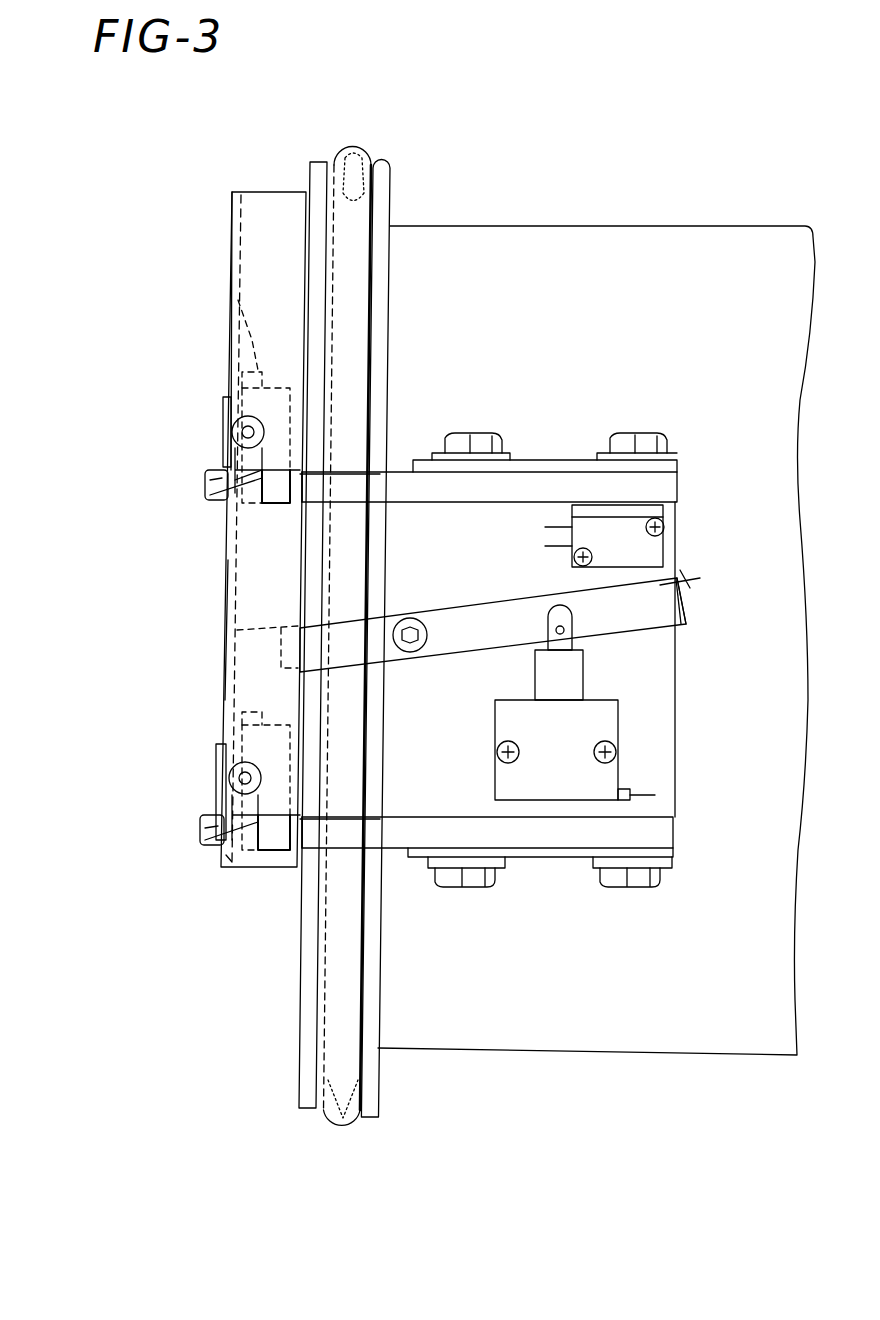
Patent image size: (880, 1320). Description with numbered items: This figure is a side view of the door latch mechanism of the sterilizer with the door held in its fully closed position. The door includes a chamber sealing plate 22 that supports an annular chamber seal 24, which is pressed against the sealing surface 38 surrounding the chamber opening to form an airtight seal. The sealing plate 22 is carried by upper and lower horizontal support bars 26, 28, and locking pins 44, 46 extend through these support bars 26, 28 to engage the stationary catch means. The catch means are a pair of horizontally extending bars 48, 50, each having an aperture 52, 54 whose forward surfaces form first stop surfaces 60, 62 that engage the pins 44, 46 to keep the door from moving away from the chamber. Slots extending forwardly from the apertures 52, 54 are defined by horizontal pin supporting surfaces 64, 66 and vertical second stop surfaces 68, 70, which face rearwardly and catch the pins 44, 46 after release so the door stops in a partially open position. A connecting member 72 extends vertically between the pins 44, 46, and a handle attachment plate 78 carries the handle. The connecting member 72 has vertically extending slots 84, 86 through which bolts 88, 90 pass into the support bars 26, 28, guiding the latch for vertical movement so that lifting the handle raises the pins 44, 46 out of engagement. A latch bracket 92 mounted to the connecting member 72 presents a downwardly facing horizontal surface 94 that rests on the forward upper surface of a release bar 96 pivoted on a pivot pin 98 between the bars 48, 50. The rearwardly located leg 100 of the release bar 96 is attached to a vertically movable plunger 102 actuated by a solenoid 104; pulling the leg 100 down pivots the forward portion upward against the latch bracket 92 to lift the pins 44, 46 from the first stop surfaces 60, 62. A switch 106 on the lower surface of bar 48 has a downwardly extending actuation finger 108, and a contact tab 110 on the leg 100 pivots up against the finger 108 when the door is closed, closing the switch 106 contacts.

The chamber sealing plate 22 is at (318, 1118).
The annular chamber seal 24 is at (338, 1130).
The sealing surface 38 is at (368, 1120).
The connecting member 72 is at (274, 197).
The handle attachment plate 78 is at (232, 250).
The latch bracket 92 is at (228, 592).
The downwardly facing horizontal surface 94 is at (268, 632).
The upper horizontal support bar 26 is at (230, 400).
The locking pin 44 is at (238, 332).
The bolt 88 is at (232, 428).
The first stop surface 60 is at (258, 512).
The horizontal pin supporting surface 64 is at (228, 468).
The vertical second stop surface 68 is at (222, 470).
The vertically extending slot 84 is at (226, 490).
The lower horizontal support bar 28 is at (220, 740).
The locking pin 46 is at (240, 705).
The bolt 90 is at (240, 770).
The vertically extending slot 86 is at (220, 805).
The horizontal pin supporting surface 66 is at (208, 810).
The vertical second stop surface 70 is at (232, 862).
The first stop surface 62 is at (250, 858).
The horizontally extending bar 48 is at (535, 485).
The aperture 52 is at (312, 478).
The horizontally extending bar 50 is at (514, 835).
The aperture 54 is at (340, 815).
The switch 106 is at (658, 555).
The rearwardly located leg 100 is at (612, 625).
The actuation finger 108 is at (683, 572).
The contact tab 110 is at (686, 600).
The release bar 96 is at (388, 626).
The pivot pin 98 is at (422, 626).
The plunger 102 is at (572, 672).
The solenoid 104 is at (592, 792).